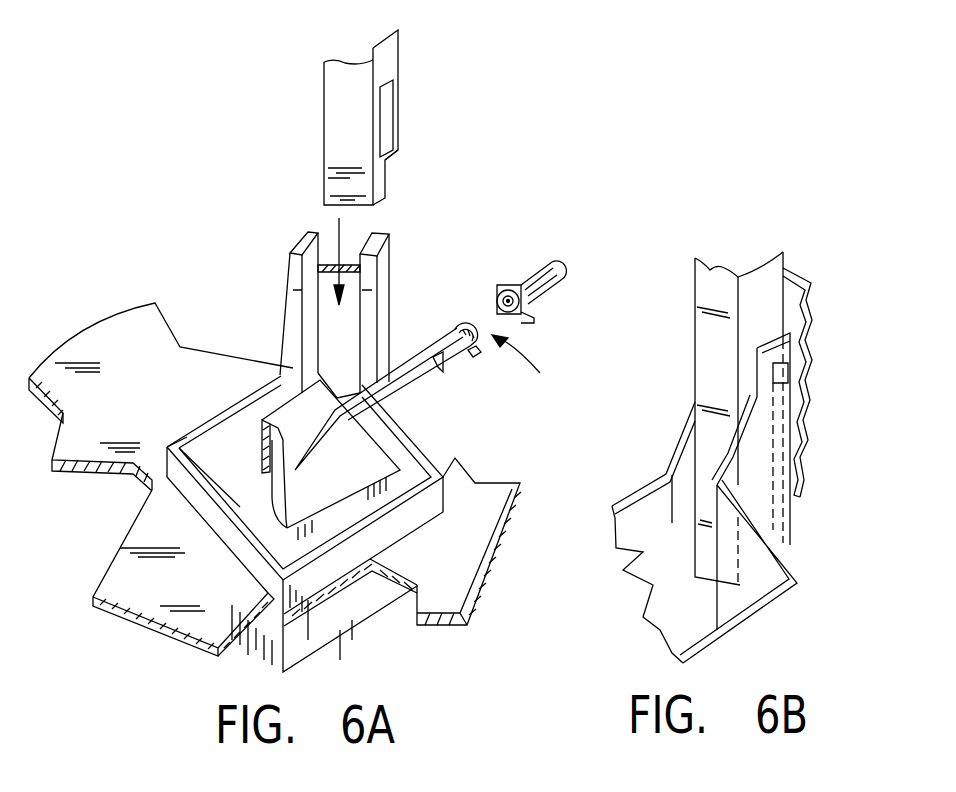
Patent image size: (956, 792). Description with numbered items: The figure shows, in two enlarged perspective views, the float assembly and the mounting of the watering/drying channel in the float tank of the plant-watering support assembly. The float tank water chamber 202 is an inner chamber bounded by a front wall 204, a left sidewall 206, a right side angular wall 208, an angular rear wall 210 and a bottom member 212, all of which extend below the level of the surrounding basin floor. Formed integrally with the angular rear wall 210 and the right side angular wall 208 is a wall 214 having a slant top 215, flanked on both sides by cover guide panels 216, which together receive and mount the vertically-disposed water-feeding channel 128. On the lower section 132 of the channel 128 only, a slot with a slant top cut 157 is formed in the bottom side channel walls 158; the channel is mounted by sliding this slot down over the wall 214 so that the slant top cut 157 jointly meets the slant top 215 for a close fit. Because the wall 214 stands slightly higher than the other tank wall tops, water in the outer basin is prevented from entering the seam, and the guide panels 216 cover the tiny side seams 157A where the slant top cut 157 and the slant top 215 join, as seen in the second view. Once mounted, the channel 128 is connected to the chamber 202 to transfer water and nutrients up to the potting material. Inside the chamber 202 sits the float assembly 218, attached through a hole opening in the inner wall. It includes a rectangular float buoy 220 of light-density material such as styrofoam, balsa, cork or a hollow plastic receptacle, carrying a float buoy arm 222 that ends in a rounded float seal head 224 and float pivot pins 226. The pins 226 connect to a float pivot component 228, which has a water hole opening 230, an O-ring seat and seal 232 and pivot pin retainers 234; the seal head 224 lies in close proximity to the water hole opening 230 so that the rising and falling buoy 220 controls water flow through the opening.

In FIG. 6A, the water-feeding channel 128 is at (337, 100).
In FIG. 6B, the water-feeding channel 128 is at (706, 375).
In FIG. 6A, the lower section 132 is at (385, 78).
In FIG. 6A, the slant top cut 157 is at (386, 97).
In FIG. 6A, the bottom side channel walls 158 is at (397, 128).
In FIG. 6A, the float tank water chamber 202 is at (207, 508).
In FIG. 6B, the float tank water chamber 202 is at (675, 605).
In FIG. 6A, the front wall 204 is at (418, 512).
In FIG. 6A, the left sidewall 206 is at (252, 563).
In FIG. 6A, the right side angular wall 208 is at (438, 462).
In FIG. 6A, the angular rear wall 210 is at (187, 437).
In FIG. 6A, the bottom member 212 is at (240, 507).
In FIG. 6A, the wall 214 is at (327, 313).
In FIG. 6A, the slant top 215 is at (343, 263).
In FIG. 6A, the cover guide panels 216 is at (305, 243).
In FIG. 6B, the cover guide panels 216 is at (779, 334).
In FIG. 6A, the float assembly 218 is at (539, 359).
In FIG. 6A, the float buoy 220 is at (286, 500).
In FIG. 6A, the float buoy arm 222 is at (343, 425).
In FIG. 6A, the float seal head 224 is at (462, 325).
In FIG. 6A, the float pivot pins 226 is at (478, 358).
In FIG. 6A, the float pivot component 228 is at (557, 275).
In FIG. 6A, the water hole opening 230 is at (513, 292).
In FIG. 6A, the O-ring seat and seal 232 is at (525, 282).
In FIG. 6A, the pivot pin retainers 234 is at (538, 310).
In FIG. 6B, the side seams 157A is at (772, 382).